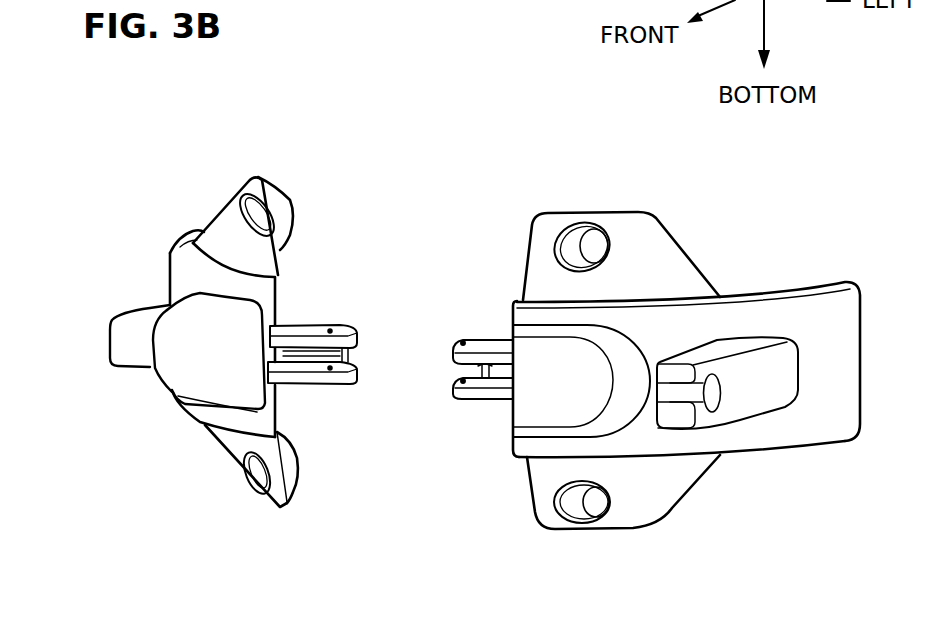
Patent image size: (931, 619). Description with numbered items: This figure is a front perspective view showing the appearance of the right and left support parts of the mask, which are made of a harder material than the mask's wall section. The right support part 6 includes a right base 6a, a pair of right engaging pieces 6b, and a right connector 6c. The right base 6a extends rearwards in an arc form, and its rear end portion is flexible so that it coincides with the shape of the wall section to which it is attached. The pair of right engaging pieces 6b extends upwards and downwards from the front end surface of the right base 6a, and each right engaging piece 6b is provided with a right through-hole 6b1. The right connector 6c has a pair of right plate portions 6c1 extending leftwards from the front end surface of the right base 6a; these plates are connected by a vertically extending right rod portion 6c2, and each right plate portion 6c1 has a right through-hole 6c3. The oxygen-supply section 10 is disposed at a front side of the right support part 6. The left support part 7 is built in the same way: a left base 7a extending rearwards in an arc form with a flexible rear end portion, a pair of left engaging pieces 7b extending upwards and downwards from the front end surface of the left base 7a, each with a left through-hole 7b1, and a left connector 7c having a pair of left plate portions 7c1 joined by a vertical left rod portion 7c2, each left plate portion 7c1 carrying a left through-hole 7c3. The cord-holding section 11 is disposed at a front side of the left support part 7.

The right support part 6 is at (206, 180).
The right base 6a is at (170, 263).
The right engaging pieces 6b is at (272, 248).
The right through-hole 6b1 is at (247, 197).
The right connector 6c is at (339, 305).
The right plate portions 6c1 is at (358, 338).
The right rod portion 6c2 is at (354, 358).
The right through-hole 6c3 is at (325, 329).
The oxygen-supply section 10 is at (127, 320).
The left support part 7 is at (730, 185).
The left base 7a is at (763, 306).
The left engaging pieces 7b is at (647, 222).
The left through-hole 7b1 is at (573, 233).
The left connector 7c is at (475, 278).
The left plate portions 7c1 is at (487, 343).
The left rod portion 7c2 is at (488, 380).
The left through-hole 7c3 is at (462, 341).
The cord-holding section 11 is at (743, 403).